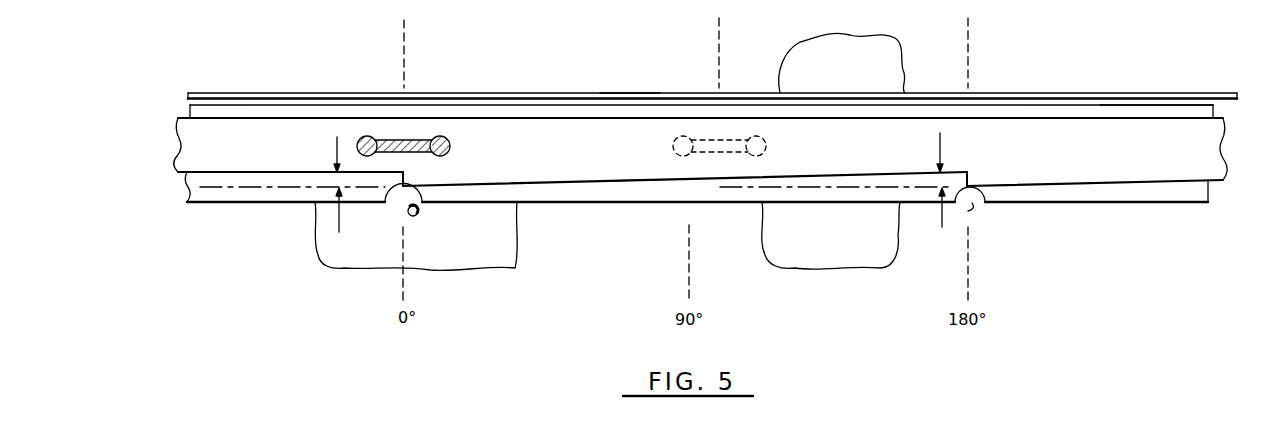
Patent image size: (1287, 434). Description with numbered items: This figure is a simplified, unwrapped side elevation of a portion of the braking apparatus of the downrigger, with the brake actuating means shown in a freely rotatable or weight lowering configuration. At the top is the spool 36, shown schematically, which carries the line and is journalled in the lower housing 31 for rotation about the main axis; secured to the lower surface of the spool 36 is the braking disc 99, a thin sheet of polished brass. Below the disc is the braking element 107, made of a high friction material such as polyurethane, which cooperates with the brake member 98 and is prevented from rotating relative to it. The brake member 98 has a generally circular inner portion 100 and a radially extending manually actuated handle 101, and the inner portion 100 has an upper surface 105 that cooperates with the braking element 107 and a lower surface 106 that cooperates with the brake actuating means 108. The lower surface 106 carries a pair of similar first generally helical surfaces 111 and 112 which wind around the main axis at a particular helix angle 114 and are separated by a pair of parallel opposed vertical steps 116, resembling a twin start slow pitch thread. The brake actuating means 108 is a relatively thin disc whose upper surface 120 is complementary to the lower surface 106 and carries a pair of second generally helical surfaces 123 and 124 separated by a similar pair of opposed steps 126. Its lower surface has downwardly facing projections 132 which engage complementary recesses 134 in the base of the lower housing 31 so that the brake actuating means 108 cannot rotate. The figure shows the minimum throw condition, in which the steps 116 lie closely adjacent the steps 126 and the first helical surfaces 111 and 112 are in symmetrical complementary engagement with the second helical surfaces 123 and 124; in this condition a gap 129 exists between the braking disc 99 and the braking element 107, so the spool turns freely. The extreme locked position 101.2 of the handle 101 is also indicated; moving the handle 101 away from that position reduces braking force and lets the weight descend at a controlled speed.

The gap 129 is at (190, 97).
The braking disc 99 is at (623, 93).
The braking element 107 is at (188, 105).
The upper surface 105 is at (1123, 112).
The second helical surface 124 is at (243, 172).
The step 126 is at (405, 176).
The upper surface 120 is at (835, 170).
The second helical surface 123 is at (638, 177).
The first helical surface 111 is at (612, 181).
The first helical surface 112 is at (263, 178).
The brake actuating means 108 is at (207, 193).
The helix angle 114 is at (335, 148).
The step 116 is at (395, 205).
The projection 132 is at (392, 210).
The recess 134 is at (415, 218).
The brake handle 101 is at (450, 140).
The extreme locked position 101.2 is at (768, 148).
The spool 36 is at (808, 58).
The lower housing 31 is at (482, 258).
The brake member 98 is at (1200, 147).
The inner portion 100 is at (1198, 160).
The lower surface 106 is at (1220, 187).